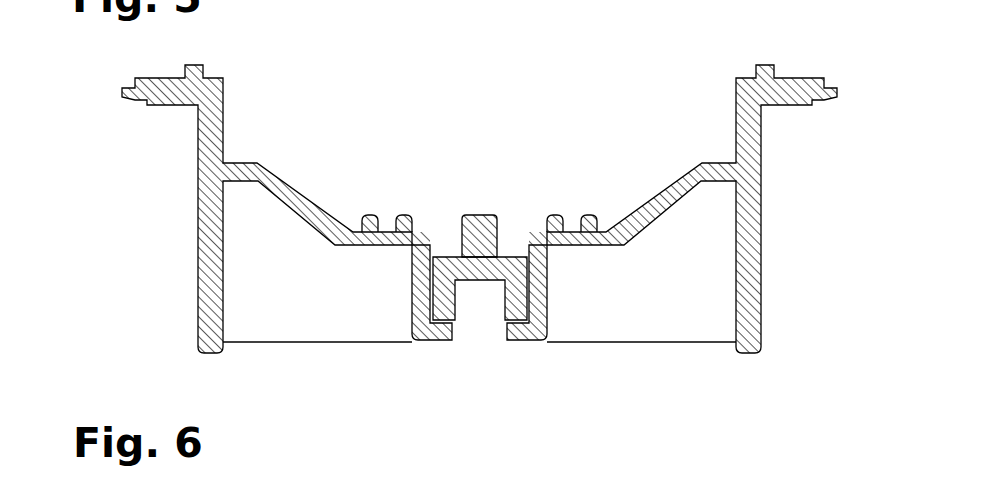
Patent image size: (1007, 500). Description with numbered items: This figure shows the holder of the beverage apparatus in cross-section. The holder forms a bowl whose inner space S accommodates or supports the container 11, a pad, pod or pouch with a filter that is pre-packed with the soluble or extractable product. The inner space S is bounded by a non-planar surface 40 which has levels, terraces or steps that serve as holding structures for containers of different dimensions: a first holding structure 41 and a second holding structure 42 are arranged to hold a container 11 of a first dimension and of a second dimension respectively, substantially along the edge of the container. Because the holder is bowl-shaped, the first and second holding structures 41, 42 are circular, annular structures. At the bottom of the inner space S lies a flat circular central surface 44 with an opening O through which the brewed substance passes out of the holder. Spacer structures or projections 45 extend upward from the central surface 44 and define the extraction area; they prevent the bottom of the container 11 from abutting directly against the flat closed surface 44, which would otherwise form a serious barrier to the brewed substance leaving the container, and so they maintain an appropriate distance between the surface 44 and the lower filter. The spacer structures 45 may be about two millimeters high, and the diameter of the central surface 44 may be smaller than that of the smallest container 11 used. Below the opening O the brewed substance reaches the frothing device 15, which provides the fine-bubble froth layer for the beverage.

The container 11 is at (733, 37).
The frothing device 15 is at (477, 278).
The non-planar surface 40 is at (357, 150).
The first holding structure 41 is at (322, 208).
The second holding structure 42 is at (289, 188).
The flat circular central surface 44 is at (423, 227).
The spacer structures 45 is at (372, 213).
The opening O is at (447, 221).
The inner space S is at (478, 112).